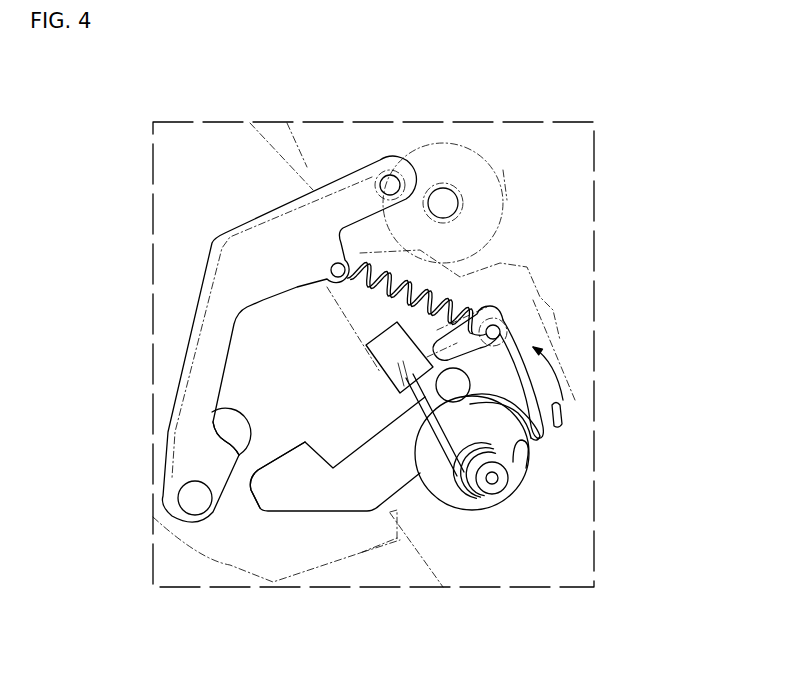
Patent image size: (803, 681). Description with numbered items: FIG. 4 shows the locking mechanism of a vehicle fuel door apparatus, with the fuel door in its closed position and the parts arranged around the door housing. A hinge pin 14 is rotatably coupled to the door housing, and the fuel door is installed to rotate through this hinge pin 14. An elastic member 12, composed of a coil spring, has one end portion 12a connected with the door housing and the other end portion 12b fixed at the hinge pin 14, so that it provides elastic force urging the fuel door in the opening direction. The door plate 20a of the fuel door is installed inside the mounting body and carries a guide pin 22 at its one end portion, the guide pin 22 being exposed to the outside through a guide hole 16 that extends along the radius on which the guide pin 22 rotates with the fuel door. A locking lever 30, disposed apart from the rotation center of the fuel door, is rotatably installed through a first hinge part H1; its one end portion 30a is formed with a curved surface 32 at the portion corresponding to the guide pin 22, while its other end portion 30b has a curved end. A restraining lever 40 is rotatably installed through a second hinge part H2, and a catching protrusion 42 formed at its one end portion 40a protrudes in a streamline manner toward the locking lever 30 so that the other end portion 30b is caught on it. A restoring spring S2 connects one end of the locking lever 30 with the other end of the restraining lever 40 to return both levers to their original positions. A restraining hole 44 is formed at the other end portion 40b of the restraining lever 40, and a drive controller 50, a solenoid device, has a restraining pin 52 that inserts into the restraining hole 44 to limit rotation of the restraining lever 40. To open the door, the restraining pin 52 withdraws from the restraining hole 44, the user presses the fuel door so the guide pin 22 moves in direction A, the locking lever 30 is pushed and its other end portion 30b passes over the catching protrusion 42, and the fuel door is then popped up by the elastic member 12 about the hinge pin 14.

The drive controller 50 is at (268, 146).
The restraining lever 40 is at (183, 345).
The other end portion of the restraining lever 40b is at (358, 185).
The restraining hole 44 is at (395, 190).
The restraining pin 52 is at (450, 203).
The restoring spring S2 is at (427, 290).
The curved surface 32 is at (500, 324).
The guide hole 16 is at (560, 403).
The guide pin 22 is at (562, 419).
The direction A is at (563, 373).
The door plate 20a is at (525, 300).
The first hinge part H1 is at (458, 386).
The one end portion of the locking lever 30a is at (542, 437).
The elastic member 12 is at (471, 511).
The other end portion of the elastic member 12b is at (508, 480).
The hinge pin 14 is at (506, 495).
The one end portion of the elastic member 12a is at (402, 398).
The locking lever 30 is at (335, 520).
The other end portion of the locking lever 30b is at (298, 490).
The catching protrusion 42 is at (216, 408).
The one end portion of the restraining lever 40a is at (192, 441).
The second hinge part H2 is at (190, 503).